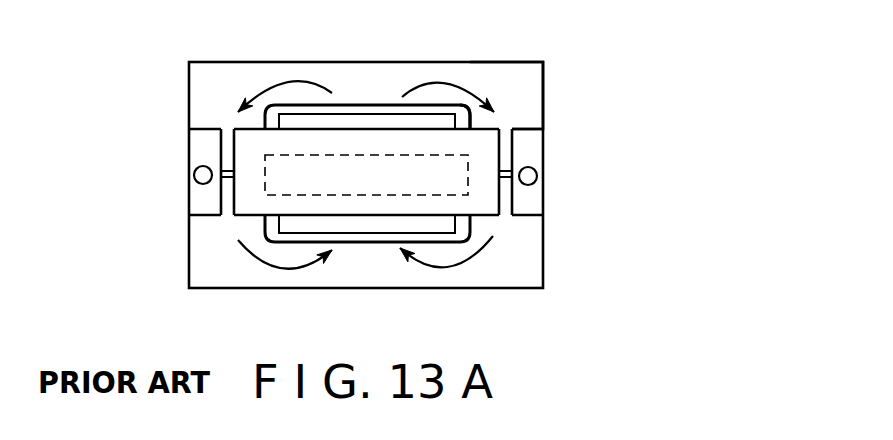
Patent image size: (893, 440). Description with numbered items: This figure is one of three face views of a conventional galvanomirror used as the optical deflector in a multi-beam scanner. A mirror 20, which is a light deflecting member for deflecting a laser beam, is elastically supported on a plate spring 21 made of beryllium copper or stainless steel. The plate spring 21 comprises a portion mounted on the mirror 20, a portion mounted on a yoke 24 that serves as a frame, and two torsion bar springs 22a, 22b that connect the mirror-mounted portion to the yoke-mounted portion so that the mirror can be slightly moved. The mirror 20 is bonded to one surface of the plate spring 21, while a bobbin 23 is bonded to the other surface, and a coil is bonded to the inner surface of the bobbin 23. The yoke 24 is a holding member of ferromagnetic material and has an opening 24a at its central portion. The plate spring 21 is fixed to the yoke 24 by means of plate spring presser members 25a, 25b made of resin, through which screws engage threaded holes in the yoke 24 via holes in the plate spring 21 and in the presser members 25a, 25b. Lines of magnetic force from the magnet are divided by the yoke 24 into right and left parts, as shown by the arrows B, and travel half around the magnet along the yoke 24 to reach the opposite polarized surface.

The mirror 20 is at (241, 138).
The plate spring 21 is at (345, 131).
The bobbin 23 is at (365, 122).
The arrows B is at (442, 83).
The yoke 24 is at (503, 75).
The opening 24a is at (472, 121).
The torsion bar spring 22a is at (227, 178).
The torsion bar spring 22b is at (500, 178).
The plate spring presser member 25a is at (197, 155).
The plate spring presser member 25b is at (533, 198).